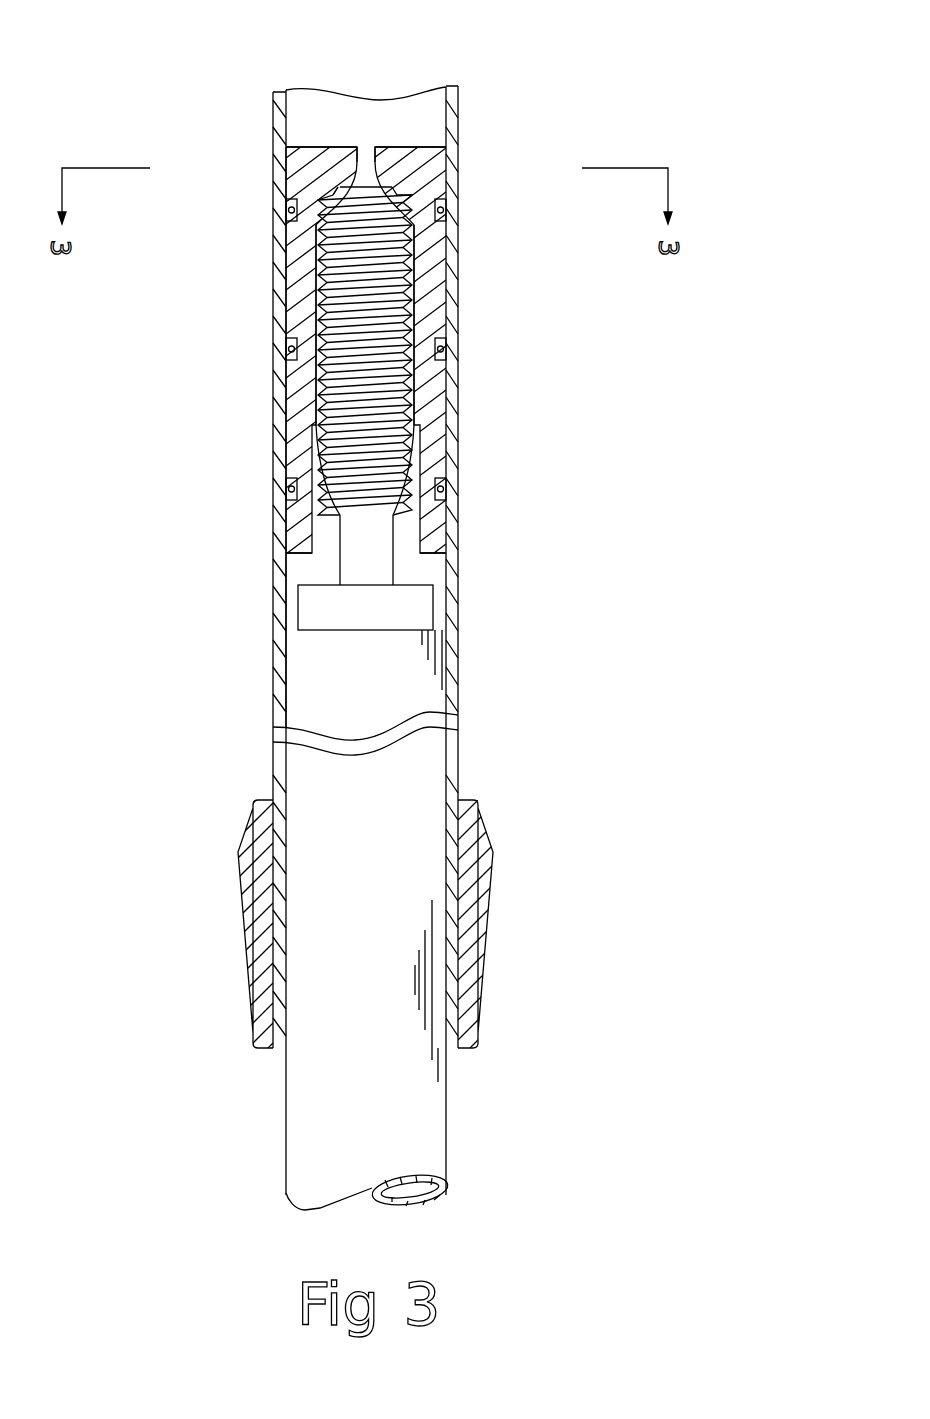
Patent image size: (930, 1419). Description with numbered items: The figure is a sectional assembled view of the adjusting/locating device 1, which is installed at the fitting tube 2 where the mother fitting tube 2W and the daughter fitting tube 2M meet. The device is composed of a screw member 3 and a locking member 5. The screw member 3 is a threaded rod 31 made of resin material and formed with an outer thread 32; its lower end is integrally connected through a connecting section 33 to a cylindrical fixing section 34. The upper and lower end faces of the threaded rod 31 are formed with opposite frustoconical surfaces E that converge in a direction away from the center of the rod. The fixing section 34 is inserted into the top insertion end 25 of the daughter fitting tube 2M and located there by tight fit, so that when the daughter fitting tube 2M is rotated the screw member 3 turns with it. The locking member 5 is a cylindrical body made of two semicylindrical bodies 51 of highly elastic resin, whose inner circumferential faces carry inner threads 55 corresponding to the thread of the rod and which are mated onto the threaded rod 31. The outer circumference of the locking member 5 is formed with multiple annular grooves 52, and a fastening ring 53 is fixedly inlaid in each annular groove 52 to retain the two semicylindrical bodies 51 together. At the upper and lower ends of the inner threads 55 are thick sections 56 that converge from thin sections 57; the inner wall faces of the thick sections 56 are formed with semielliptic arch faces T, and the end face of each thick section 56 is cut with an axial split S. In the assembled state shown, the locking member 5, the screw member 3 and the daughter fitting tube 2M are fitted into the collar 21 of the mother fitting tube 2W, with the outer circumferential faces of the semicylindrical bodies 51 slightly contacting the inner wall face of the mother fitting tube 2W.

The brush assembly 1 is at (527, 730).
The fitting tube 2 is at (480, 516).
The mother fitting tube 2W is at (461, 686).
The daughter fitting tube 2M is at (343, 998).
The screw member 3 is at (418, 323).
The threaded rod 31 is at (412, 402).
The outer thread 32 is at (416, 365).
The connecting section 33 is at (382, 557).
The fixing section 34 is at (415, 608).
The locking member 5 is at (447, 262).
The semicylindrical body 51 is at (303, 383).
The annular groove 52 is at (287, 214).
The fastening ring 53 is at (446, 211).
The inner thread 55 is at (323, 387).
The thick section 56 is at (295, 188).
The thin section 57 is at (290, 266).
The collar 21 is at (468, 945).
The insertion end 25 is at (300, 678).
The semielliptic arch face T is at (348, 183).
The axial split S is at (367, 138).
The frustoconical surface E is at (388, 190).